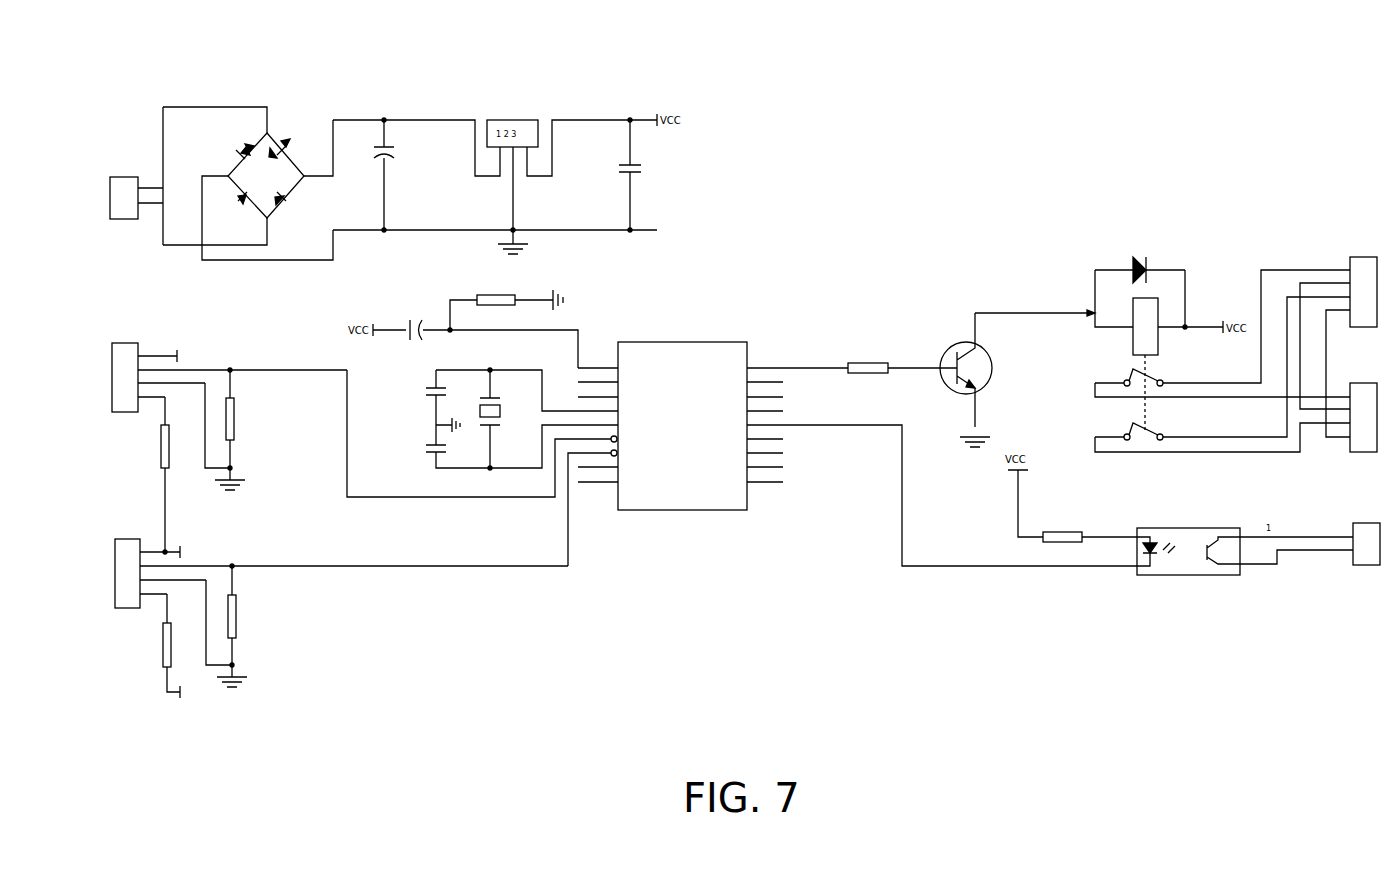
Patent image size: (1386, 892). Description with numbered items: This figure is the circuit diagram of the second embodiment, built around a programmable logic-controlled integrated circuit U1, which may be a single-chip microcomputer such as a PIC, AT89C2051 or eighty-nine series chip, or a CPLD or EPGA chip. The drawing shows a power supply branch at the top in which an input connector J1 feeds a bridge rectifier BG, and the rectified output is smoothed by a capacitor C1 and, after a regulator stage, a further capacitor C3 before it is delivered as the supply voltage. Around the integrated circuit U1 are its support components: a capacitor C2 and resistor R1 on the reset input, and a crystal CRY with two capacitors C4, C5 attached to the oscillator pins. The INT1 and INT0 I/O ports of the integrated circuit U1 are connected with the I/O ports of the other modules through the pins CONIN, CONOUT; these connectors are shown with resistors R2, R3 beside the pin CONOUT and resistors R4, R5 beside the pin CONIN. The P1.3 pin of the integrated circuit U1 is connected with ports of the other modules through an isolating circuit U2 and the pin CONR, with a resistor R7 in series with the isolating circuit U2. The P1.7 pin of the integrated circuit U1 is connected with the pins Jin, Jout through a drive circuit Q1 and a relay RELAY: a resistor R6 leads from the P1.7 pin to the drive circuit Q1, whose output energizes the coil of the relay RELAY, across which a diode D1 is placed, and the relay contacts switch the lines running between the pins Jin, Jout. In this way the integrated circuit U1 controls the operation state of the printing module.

The power input connector J1 is at (136, 186).
The bridge rectifier BG is at (267, 190).
The filter capacitor C1 is at (388, 175).
The output filter capacitor C3 is at (621, 175).
The pin CONOUT is at (219, 365).
The resistor R2 is at (237, 418).
The resistor R3 is at (172, 474).
The pin CONIN is at (331, 560).
The resistor R4 is at (239, 614).
The resistor R5 is at (183, 646).
The reset capacitor C2 is at (425, 321).
The reset resistor R1 is at (506, 306).
The crystal load capacitor C4 is at (428, 389).
The crystal load capacitor C5 is at (428, 448).
The crystal oscillator CRY is at (501, 419).
The microcontroller U1 is at (680, 414).
The base resistor R6 is at (861, 361).
The drive circuit Q1 is at (973, 380).
The flyback diode D1 is at (1140, 270).
The relay RELAY is at (1221, 361).
The pin JIN Jin is at (1363, 285).
The pin JOUT Jout is at (1363, 410).
The resistor R7 is at (1090, 530).
The isolating circuit U2 is at (1187, 544).
The pin CONR is at (1367, 545).